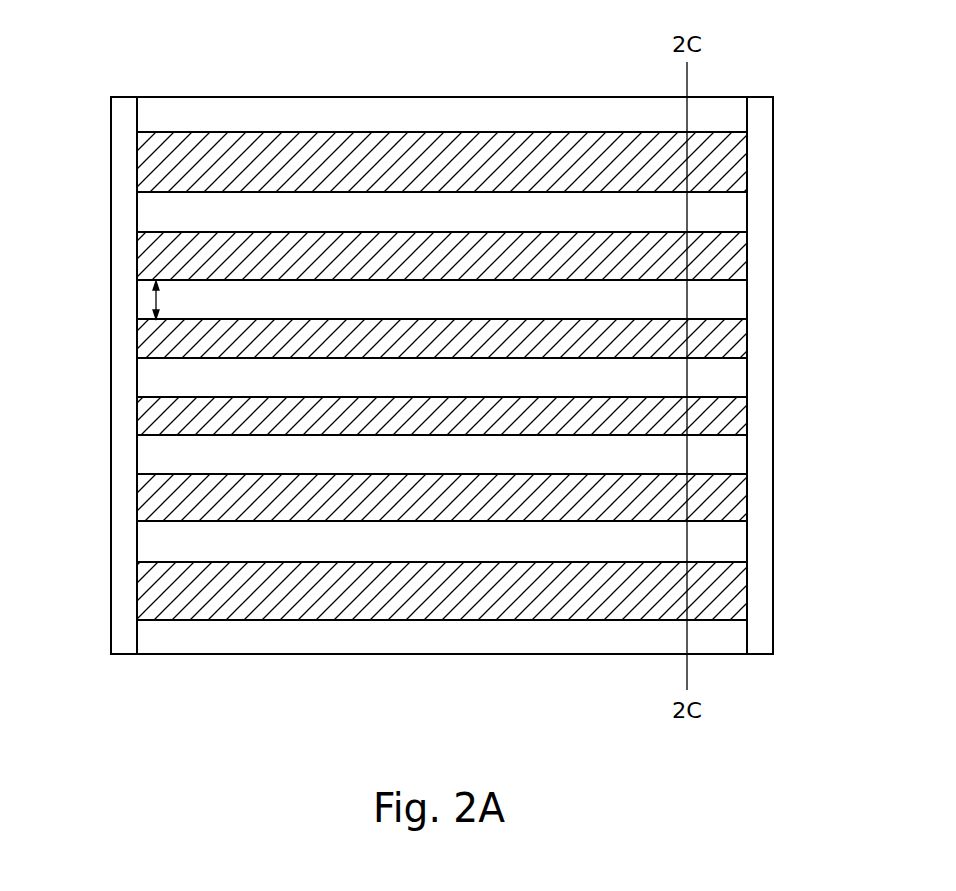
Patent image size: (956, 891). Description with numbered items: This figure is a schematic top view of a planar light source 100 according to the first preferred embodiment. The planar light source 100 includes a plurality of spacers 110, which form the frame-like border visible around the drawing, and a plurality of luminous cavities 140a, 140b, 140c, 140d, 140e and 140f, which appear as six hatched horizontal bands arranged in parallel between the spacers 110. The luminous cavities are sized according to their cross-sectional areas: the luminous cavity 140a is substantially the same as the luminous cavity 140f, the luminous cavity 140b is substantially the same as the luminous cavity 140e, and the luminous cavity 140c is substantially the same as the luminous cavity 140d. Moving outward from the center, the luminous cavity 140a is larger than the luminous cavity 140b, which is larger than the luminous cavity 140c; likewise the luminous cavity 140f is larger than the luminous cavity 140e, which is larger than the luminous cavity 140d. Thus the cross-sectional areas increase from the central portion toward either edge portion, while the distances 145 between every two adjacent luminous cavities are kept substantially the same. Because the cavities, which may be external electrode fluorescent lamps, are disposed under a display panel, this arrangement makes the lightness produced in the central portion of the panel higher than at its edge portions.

The planar light source 100 is at (129, 63).
The spacers 110 is at (392, 105).
The luminous cavity 140a is at (733, 163).
The luminous cavity 140b is at (735, 256).
The luminous cavity 140c is at (735, 335).
The luminous cavity 140d is at (735, 417).
The luminous cavity 140e is at (735, 499).
The luminous cavity 140f is at (735, 591).
The distance between adjacent luminous cavities 145 is at (152, 303).